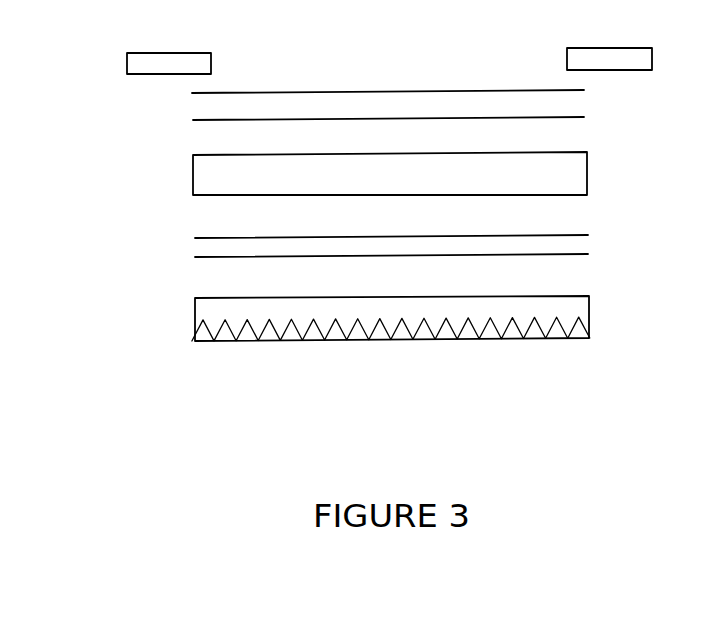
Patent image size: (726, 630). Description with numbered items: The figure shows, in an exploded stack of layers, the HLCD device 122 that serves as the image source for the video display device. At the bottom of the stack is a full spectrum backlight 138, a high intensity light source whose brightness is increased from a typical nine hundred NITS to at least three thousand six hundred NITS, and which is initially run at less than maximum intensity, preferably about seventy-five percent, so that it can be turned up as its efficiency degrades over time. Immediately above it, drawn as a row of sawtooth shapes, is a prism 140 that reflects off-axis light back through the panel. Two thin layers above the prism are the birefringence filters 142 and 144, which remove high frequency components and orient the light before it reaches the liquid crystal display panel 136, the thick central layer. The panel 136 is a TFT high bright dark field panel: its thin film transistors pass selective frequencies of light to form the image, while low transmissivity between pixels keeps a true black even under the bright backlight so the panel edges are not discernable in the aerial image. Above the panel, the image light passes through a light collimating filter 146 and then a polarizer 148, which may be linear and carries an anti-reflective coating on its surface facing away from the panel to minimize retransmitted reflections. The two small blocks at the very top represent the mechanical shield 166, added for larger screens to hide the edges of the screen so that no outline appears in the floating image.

The HLCD device 122 is at (98, 362).
The liquid crystal display panel 136 is at (587, 175).
The full spectrum backlight 138 is at (193, 304).
The prism 140 is at (579, 325).
The birefringence filter 142 is at (579, 258).
The birefringence filter 144 is at (210, 238).
The light collimating filter 146 is at (207, 121).
The polarizer 148 is at (562, 90).
The mechanical shield 166 is at (180, 53).